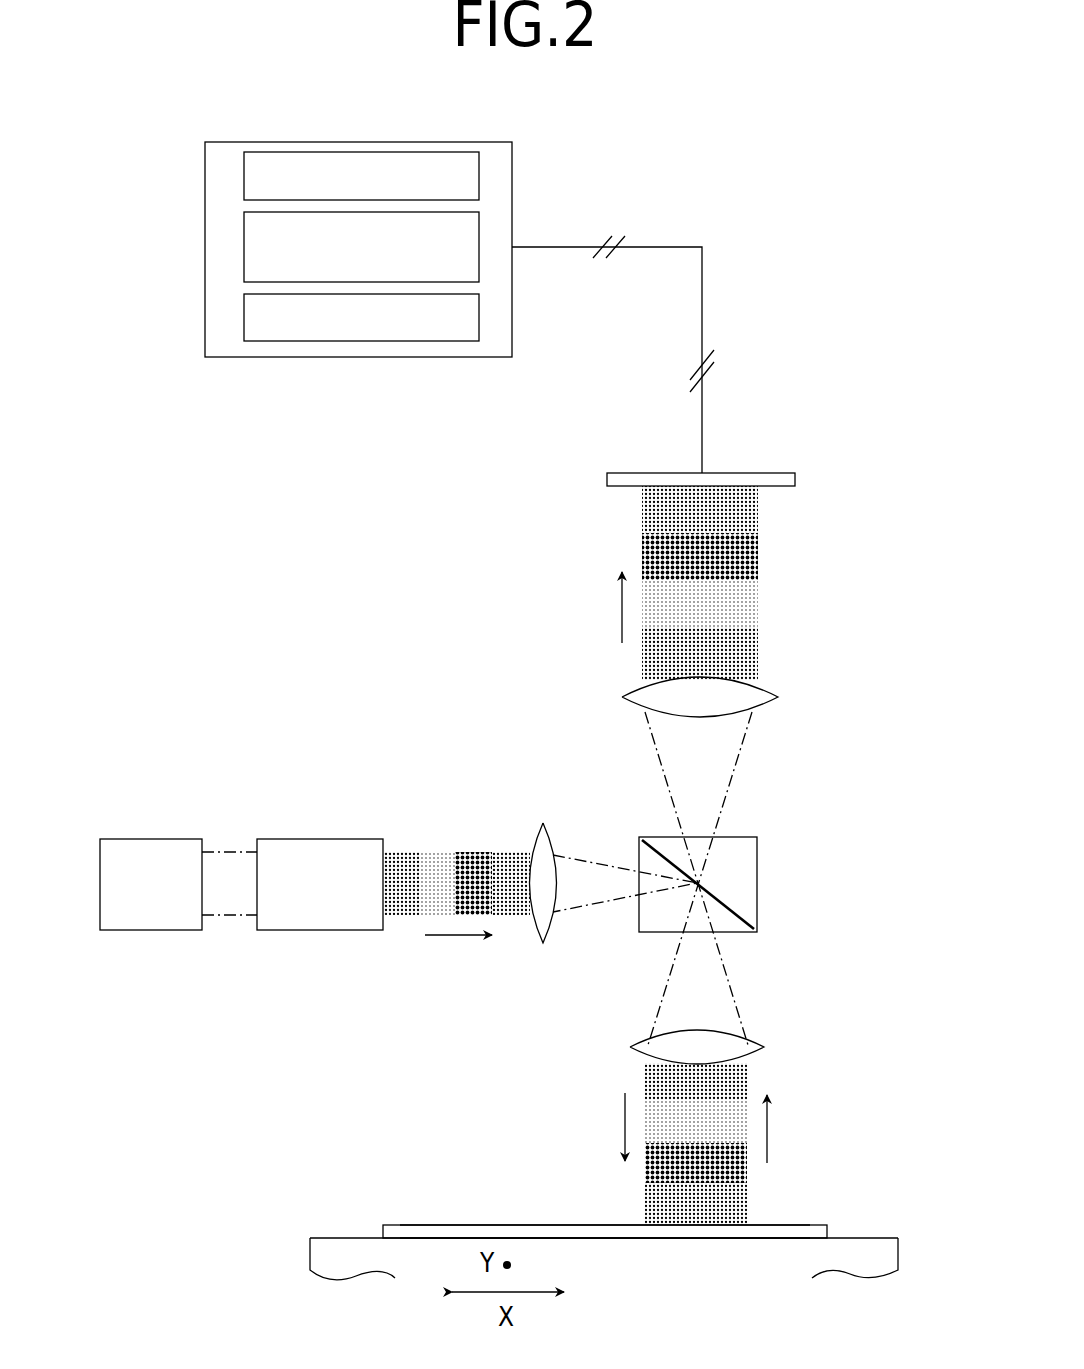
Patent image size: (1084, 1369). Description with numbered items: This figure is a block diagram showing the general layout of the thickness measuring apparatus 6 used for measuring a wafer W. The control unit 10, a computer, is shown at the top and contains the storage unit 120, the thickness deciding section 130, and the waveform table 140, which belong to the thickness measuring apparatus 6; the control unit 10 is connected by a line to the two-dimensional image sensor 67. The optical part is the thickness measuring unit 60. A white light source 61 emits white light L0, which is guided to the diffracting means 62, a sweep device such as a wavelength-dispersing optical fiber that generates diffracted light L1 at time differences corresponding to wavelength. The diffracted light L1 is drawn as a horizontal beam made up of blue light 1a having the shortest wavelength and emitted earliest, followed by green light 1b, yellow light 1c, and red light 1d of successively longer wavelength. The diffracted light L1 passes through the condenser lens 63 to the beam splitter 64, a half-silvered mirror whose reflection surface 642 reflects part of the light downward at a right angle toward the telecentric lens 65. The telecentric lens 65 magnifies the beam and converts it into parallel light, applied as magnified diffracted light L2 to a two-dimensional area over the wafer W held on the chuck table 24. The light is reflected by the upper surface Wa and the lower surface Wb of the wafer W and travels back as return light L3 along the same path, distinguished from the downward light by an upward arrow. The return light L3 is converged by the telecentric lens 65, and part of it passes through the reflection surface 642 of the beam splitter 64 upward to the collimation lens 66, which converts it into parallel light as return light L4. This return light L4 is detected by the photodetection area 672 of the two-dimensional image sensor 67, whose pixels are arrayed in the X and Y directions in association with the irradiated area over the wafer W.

The control unit 10 is at (327, 226).
The storage unit 120 is at (244, 182).
The thickness deciding section 130 is at (244, 250).
The waveform table 140 is at (244, 312).
The thickness measuring apparatus 6 is at (836, 398).
The thickness measuring unit 60 is at (528, 578).
The white light source 61 is at (147, 838).
The diffracting means 62 is at (322, 838).
The condenser lens 63 is at (552, 845).
The beam splitter 64 is at (737, 864).
The reflection surface 642 is at (732, 913).
The telecentric lens 65 is at (752, 1038).
The collimation lens 66 is at (765, 690).
The two-dimensional image sensor 67 is at (755, 474).
The photodetection area 672 is at (703, 488).
The chuck table 24 is at (330, 1260).
The wafer W is at (411, 1222).
The upper surface Wa is at (770, 1223).
The lower surface Wb is at (793, 1238).
The white light L0 is at (238, 850).
The diffracted light L1 is at (451, 818).
The magnified diffracted light L2 is at (620, 1130).
The return light L3 is at (743, 742).
The return light L4 is at (757, 567).
The blue light 1a is at (511, 835).
The green light 1b is at (477, 863).
The yellow light 1c is at (438, 863).
The red light 1d is at (400, 863).